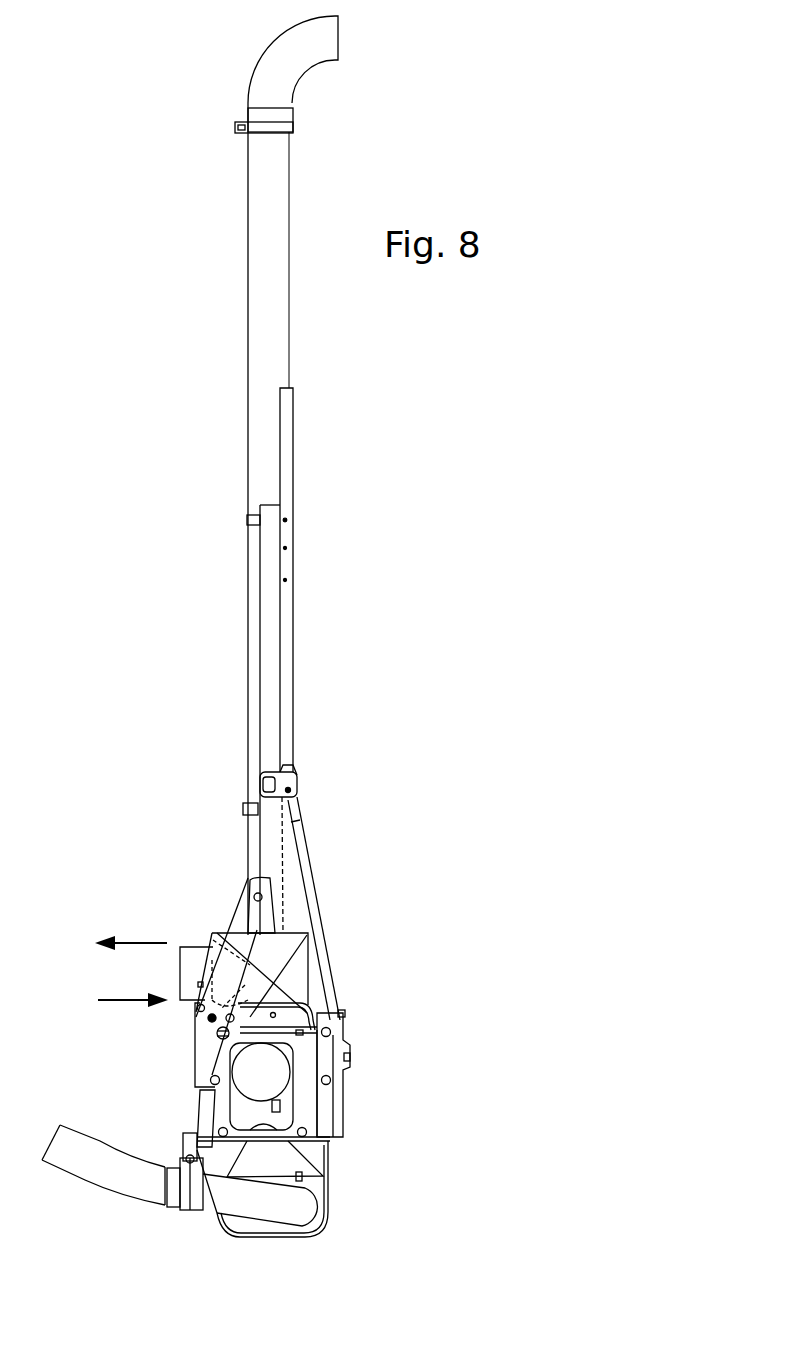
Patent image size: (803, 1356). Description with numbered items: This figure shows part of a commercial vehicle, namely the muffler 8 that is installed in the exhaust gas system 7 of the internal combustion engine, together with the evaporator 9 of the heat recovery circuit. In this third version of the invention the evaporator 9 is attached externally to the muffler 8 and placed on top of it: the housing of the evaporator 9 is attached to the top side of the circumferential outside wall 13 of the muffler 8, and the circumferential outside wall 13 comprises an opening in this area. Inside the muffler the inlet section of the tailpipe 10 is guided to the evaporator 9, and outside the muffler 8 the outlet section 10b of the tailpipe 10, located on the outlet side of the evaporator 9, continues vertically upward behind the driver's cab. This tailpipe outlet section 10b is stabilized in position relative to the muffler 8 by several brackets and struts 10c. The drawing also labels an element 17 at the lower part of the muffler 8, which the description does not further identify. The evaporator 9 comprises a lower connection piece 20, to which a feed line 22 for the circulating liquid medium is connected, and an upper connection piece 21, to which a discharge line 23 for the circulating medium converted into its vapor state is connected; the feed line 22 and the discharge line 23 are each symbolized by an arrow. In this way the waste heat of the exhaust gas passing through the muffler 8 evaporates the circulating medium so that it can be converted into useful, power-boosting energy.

The exhaust gas system 7 is at (85, 1165).
The muffler 8 is at (345, 1198).
The evaporator 9 is at (262, 940).
The tailpipe 10 is at (240, 403).
The outlet section of the tailpipe 10b is at (262, 241).
The brackets and struts 10c is at (338, 1045).
The circumferential outside wall 13 is at (330, 1152).
The hose connection 17 is at (265, 1200).
The connection piece 20 is at (182, 1003).
The connection piece 21 is at (190, 945).
The feed line 22 is at (117, 1003).
The discharge line 23 is at (142, 943).